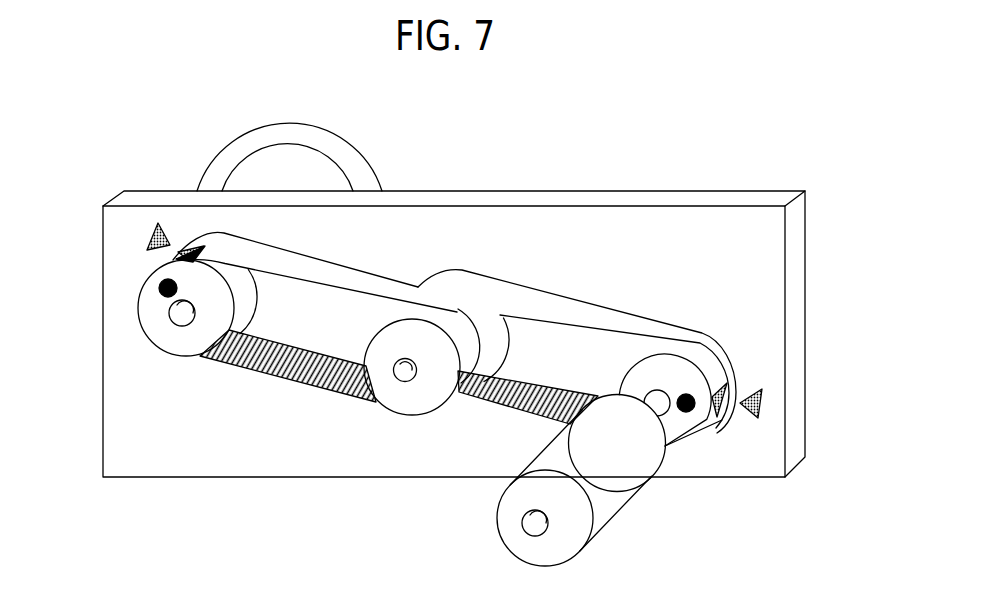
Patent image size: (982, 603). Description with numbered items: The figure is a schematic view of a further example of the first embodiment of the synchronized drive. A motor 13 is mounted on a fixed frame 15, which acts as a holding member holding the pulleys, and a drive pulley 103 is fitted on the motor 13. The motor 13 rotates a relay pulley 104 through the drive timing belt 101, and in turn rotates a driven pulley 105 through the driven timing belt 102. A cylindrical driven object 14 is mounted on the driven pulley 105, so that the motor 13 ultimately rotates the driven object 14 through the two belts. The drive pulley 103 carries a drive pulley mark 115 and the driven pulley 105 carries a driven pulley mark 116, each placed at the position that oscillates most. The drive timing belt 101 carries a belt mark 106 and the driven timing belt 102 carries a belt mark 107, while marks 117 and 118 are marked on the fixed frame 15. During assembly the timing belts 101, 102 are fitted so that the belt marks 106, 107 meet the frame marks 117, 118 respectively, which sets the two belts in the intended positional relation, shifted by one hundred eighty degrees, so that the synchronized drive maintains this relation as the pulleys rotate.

The motor 13 is at (343, 142).
The driven object 14 is at (613, 505).
The fixed frame 15 is at (527, 191).
The drive timing belt 101 is at (323, 267).
The driven timing belt 102 is at (568, 302).
The drive pulley 103 is at (173, 353).
The relay pulley 104 is at (400, 408).
The driven pulley 105 is at (628, 380).
The belt mark 106 is at (178, 252).
The belt mark 107 is at (716, 380).
The drive pulley mark 115 is at (158, 288).
The driven pulley mark 116 is at (686, 412).
The mark 117 is at (148, 237).
The mark 118 is at (762, 403).